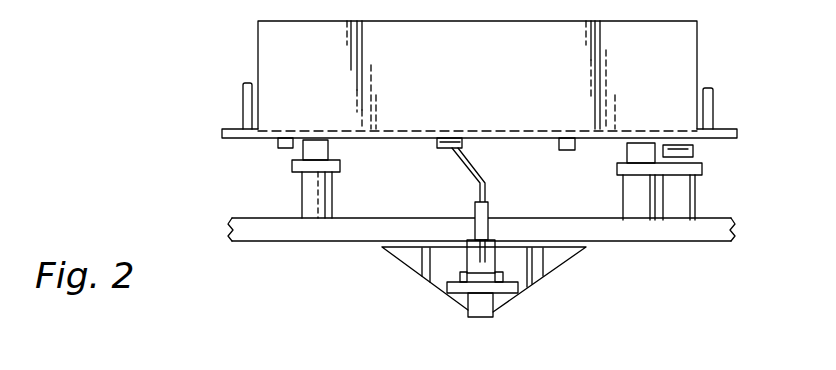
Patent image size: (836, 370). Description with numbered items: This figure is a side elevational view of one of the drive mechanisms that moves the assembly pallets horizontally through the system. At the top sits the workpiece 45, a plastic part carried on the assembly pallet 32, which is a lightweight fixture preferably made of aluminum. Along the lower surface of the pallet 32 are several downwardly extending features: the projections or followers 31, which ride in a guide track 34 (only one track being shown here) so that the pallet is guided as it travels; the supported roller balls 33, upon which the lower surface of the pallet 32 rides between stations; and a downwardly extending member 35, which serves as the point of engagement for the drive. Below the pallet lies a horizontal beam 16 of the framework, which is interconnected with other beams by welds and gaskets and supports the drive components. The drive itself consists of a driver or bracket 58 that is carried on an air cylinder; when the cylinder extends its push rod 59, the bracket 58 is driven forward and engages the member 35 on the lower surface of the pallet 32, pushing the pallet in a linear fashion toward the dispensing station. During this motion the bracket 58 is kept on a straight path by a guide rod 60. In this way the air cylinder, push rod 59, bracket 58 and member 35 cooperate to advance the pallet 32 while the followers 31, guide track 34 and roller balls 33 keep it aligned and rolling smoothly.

The horizontal beam 16 is at (709, 243).
The follower 31 is at (284, 149).
The assembly pallet 32 is at (233, 140).
The roller ball 33 is at (318, 150).
The guide track 34 is at (693, 152).
The downwardly extending member 35 is at (447, 150).
The workpiece 45 is at (258, 62).
The bracket 58 is at (483, 182).
The push rod 59 is at (497, 257).
The guide rod 60 is at (518, 290).